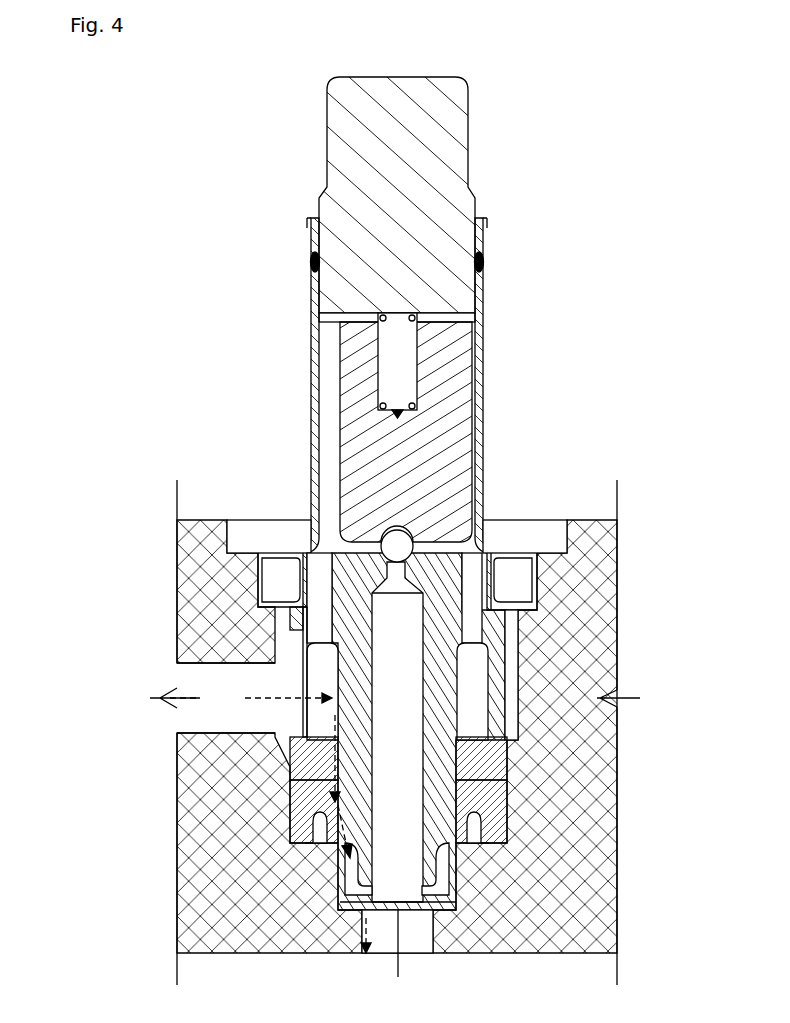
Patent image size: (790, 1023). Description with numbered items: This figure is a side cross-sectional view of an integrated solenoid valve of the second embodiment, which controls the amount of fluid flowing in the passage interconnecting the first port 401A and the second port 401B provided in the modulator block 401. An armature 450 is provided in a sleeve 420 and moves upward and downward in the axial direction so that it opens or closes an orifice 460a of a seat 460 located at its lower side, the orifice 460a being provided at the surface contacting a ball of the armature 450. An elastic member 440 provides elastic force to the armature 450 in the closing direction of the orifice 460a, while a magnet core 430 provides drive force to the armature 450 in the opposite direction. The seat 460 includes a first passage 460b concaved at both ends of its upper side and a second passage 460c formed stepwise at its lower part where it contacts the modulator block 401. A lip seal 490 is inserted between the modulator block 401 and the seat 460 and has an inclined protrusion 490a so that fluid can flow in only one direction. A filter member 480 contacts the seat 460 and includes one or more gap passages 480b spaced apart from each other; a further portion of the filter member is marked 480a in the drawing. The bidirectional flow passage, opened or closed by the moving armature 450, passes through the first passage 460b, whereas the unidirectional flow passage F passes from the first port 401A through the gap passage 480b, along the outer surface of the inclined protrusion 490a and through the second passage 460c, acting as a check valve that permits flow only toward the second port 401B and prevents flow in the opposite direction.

The modulator block 401 is at (598, 594).
The first port 401A is at (197, 690).
The second port 401B is at (418, 935).
The sleeve 420 is at (311, 282).
The magnet core 430 is at (327, 140).
The elastic member 440 is at (378, 358).
The armature 450 is at (350, 420).
The seat 460 is at (450, 622).
The orifice 460a is at (385, 535).
The first passage 460b is at (298, 570).
The second passage 460c is at (345, 878).
The filter member 480 is at (512, 645).
The first seal 480a is at (305, 635).
The gap passage 480b is at (485, 752).
The lip seal 490 is at (507, 802).
The inclined protrusion 490a is at (470, 830).
The unidirectional flow passage F is at (262, 700).